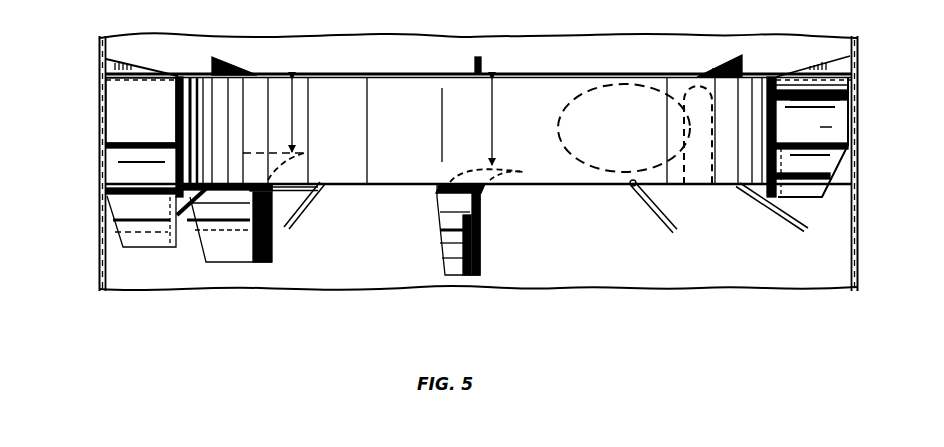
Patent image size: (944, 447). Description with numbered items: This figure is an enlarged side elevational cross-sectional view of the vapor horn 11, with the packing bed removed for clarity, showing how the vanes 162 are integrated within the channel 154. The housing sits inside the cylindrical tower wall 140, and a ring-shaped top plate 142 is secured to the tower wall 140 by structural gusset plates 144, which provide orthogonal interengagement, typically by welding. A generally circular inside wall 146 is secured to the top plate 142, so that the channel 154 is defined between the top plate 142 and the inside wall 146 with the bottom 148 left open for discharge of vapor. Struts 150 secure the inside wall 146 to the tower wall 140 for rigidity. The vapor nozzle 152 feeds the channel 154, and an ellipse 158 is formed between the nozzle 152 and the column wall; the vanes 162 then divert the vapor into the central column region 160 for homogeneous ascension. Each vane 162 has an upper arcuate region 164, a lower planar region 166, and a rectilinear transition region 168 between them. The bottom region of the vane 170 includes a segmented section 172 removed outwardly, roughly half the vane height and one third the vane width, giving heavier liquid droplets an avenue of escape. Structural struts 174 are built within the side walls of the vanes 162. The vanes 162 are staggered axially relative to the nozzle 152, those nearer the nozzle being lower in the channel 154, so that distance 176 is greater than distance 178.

The vapor horn 11 is at (413, 72).
The tower wall 140 is at (856, 70).
The top plate 142 is at (521, 72).
The gusset plates 144 is at (232, 62).
The inside wall 146 is at (550, 176).
The bottom 148 is at (356, 186).
The struts 150 is at (316, 208).
The nozzle 152 is at (660, 175).
The channel 154 is at (116, 110).
The ellipse 158 is at (630, 116).
The central column region 160 is at (563, 246).
The vanes 162 is at (233, 250).
The upper arcuate region 164 is at (253, 163).
The lower planar region 166 is at (190, 212).
The rectilinear transition region 168 is at (838, 107).
The bottom region of the vane 170 is at (820, 183).
The segmented section 172 is at (432, 243).
The structural struts 174 is at (277, 242).
The distance 176 is at (497, 135).
The distance 178 is at (297, 118).